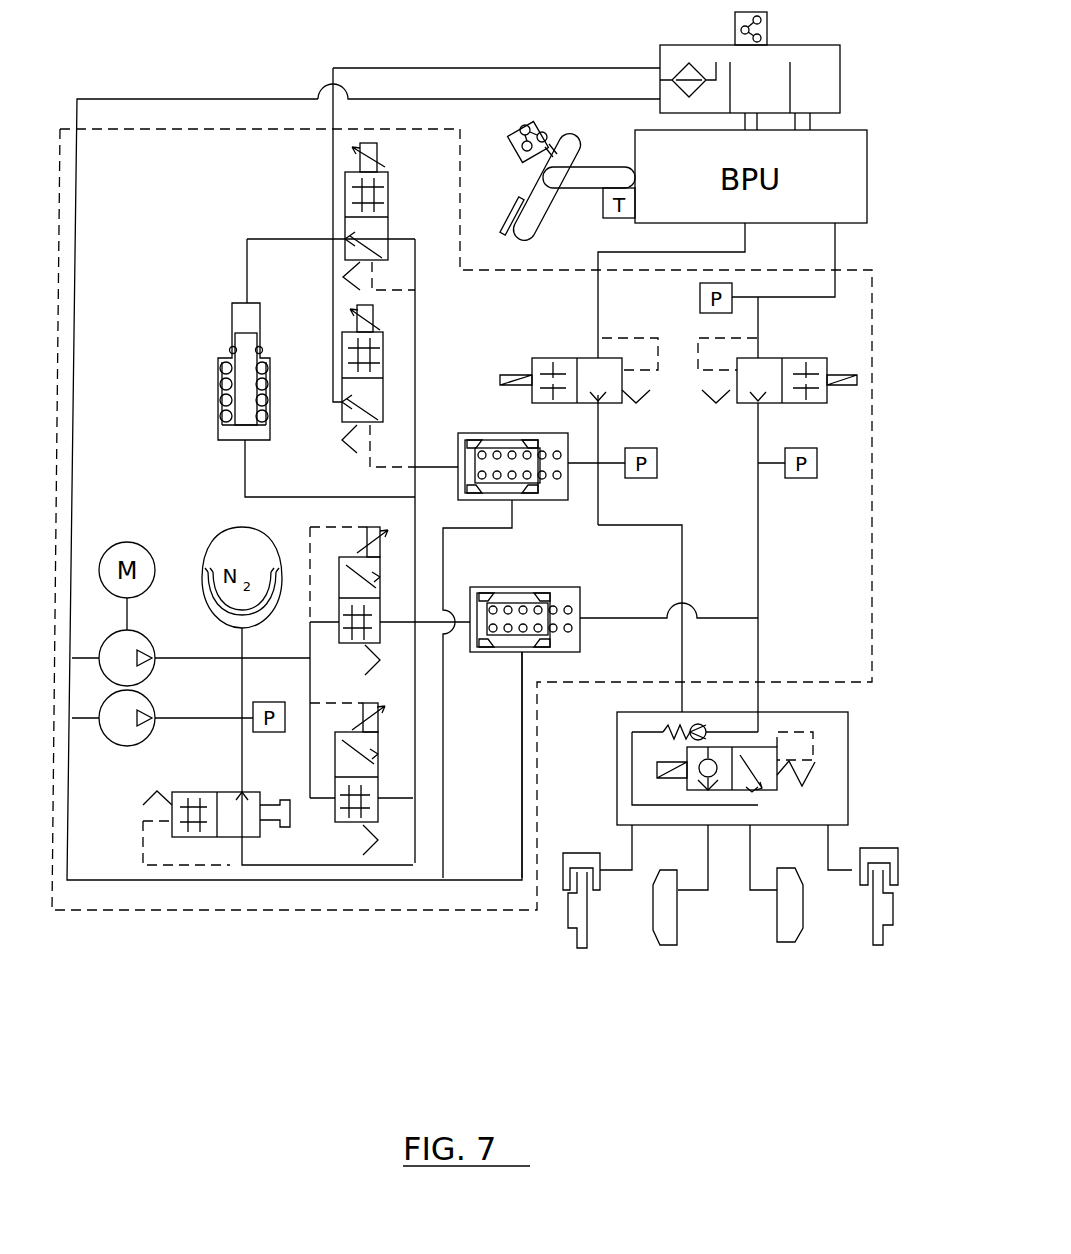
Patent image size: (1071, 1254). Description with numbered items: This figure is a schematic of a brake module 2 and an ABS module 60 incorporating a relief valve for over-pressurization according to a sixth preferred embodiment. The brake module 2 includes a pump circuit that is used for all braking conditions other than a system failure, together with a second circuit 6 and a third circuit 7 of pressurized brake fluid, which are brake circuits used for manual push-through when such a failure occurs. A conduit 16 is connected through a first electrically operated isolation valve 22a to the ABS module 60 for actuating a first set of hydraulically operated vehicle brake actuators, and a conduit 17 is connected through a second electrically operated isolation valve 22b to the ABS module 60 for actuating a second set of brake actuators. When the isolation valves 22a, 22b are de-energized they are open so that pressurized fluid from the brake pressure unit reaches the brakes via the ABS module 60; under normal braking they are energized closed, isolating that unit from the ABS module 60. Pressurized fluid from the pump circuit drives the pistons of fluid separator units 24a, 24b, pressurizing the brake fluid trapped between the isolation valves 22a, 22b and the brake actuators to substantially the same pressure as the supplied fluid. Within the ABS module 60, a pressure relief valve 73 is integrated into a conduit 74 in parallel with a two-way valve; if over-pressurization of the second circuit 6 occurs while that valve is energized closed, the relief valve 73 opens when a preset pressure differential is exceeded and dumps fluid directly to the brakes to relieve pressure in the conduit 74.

The brake module 2 is at (232, 912).
The second circuit 6 is at (661, 531).
The third circuit 7 is at (767, 608).
The conduit 16 is at (598, 312).
The conduit 17 is at (835, 250).
The first electrically operated isolation valve 22a is at (548, 358).
The second electrically operated isolation valve 22b is at (827, 358).
The fluid separator unit 24a is at (485, 433).
The fluid separator unit 24b is at (498, 652).
The ABS module 60 is at (848, 762).
The pressure relief valve 73 is at (663, 732).
The conduit 74 is at (758, 663).